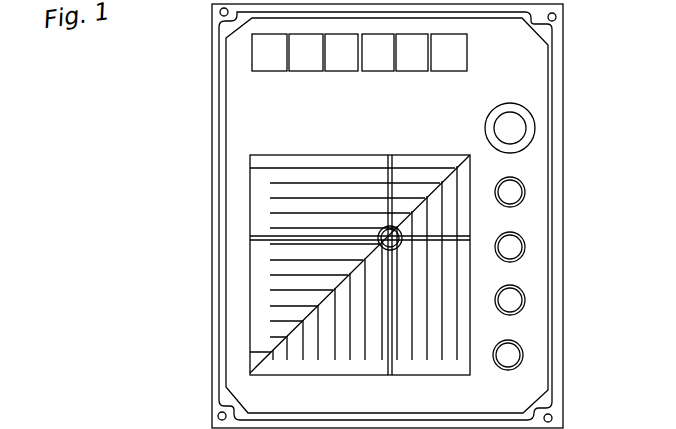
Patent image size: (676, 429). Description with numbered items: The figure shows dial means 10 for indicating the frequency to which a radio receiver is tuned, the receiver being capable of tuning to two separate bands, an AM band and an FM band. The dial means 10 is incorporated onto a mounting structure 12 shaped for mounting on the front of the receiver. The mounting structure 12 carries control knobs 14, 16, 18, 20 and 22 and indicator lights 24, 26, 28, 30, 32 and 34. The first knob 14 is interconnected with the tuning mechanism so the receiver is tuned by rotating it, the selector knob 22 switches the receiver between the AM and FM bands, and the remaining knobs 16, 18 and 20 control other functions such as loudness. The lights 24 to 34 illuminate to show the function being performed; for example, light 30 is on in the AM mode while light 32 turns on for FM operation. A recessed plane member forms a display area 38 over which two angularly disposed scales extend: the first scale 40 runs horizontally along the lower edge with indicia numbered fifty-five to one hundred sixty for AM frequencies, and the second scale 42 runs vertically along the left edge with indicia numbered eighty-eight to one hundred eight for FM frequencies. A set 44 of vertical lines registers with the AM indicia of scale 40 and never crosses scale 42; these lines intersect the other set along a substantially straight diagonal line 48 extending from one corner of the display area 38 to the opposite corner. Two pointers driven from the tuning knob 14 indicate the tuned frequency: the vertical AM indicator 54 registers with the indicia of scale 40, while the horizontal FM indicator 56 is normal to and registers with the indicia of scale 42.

The dial means 10 is at (197, 274).
The mounting structure 12 is at (232, 113).
The tuning knob 14 is at (522, 128).
The control knob 16 is at (517, 193).
The control knob 18 is at (517, 245).
The control knob 20 is at (517, 300).
The selector knob 22 is at (515, 355).
The indicator light 24 is at (275, 63).
The indicator light 26 is at (311, 63).
The indicator light 28 is at (347, 63).
The indicator light 30 is at (383, 63).
The indicator light 32 is at (418, 63).
The indicator light 34 is at (460, 67).
The display area 38 is at (353, 177).
The first scale 40 is at (461, 378).
The second scale 42 is at (263, 168).
The set of vertical lines 44 is at (448, 200).
The straight line 48 is at (450, 178).
The AM indicator 54 is at (393, 330).
The FM indicator 56 is at (447, 236).